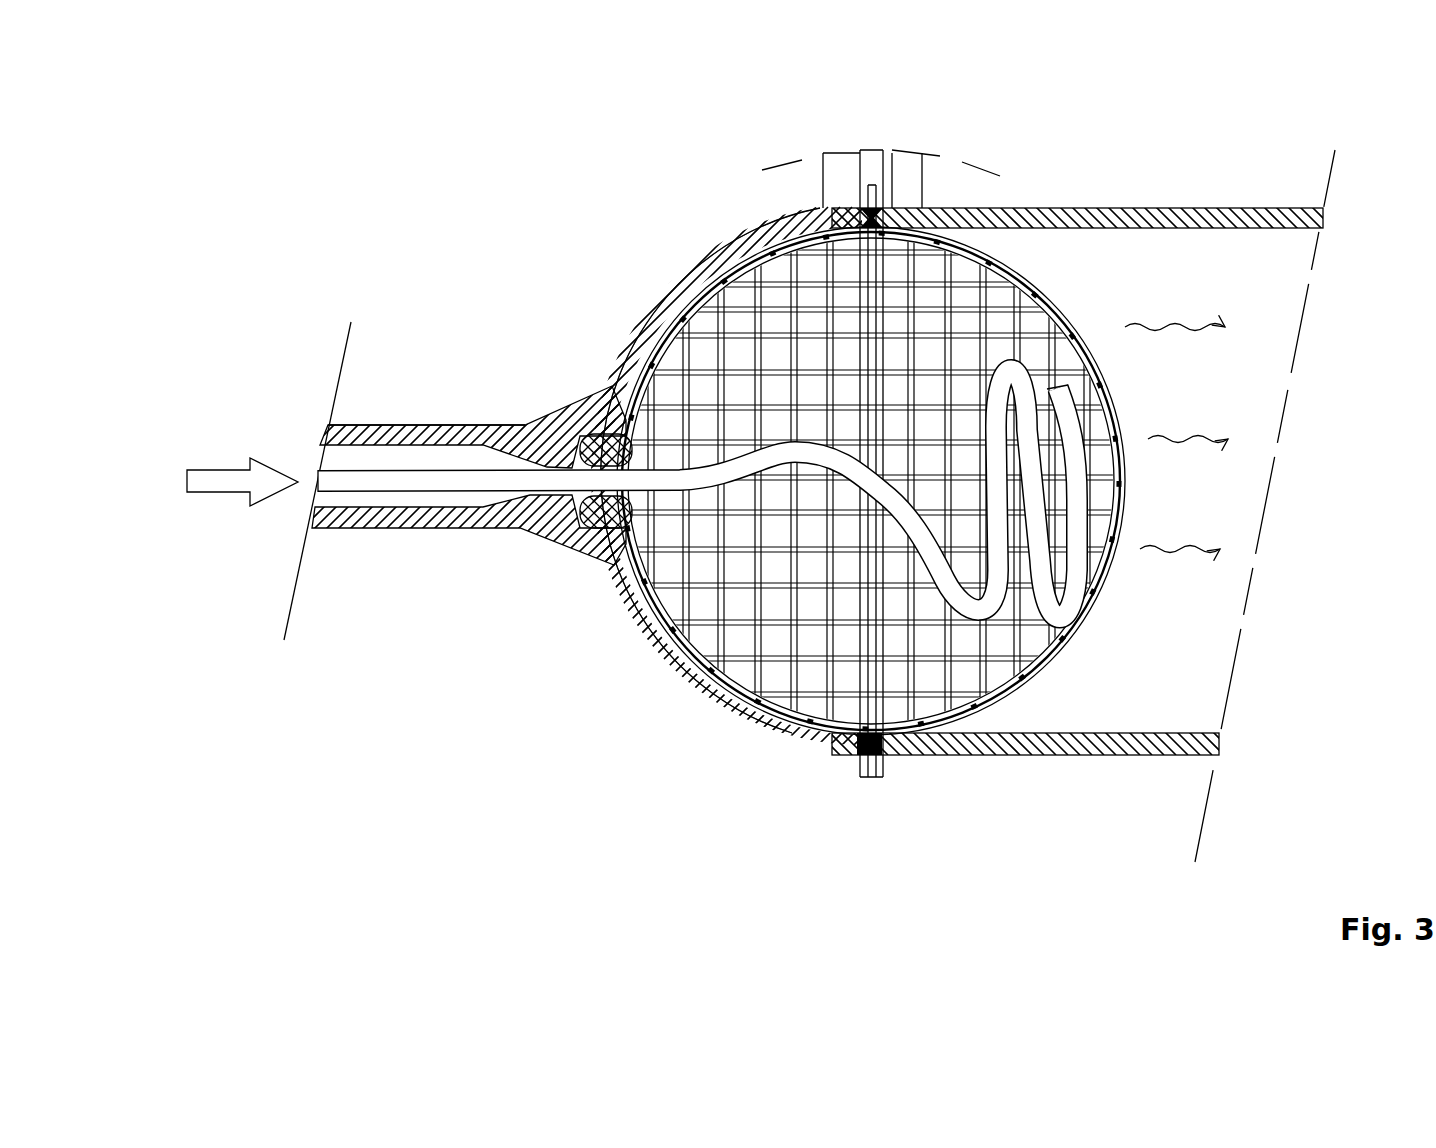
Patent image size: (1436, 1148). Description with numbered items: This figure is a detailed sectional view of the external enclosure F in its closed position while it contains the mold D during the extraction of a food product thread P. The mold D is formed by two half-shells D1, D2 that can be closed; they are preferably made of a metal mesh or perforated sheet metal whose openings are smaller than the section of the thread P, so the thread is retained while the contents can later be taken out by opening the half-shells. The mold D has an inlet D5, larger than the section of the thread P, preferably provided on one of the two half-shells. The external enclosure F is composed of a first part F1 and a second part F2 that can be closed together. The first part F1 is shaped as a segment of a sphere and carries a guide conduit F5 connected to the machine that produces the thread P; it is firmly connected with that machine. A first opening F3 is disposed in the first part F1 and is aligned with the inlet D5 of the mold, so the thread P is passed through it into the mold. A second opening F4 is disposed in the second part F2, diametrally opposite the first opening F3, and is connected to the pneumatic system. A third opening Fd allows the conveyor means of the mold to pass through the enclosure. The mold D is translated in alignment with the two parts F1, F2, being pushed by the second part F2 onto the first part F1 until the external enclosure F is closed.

The thread P is at (350, 477).
The external enclosure F is at (724, 236).
The first part F1 is at (668, 312).
The second part F2 is at (1176, 222).
The first opening F3 is at (541, 455).
The second opening F4 is at (1281, 569).
The guide conduit F5 is at (410, 425).
The third opening Fd is at (934, 204).
The mold D is at (1077, 652).
The half-shell D1 is at (768, 688).
The half-shell D2 is at (972, 708).
The inlet D5 is at (572, 510).